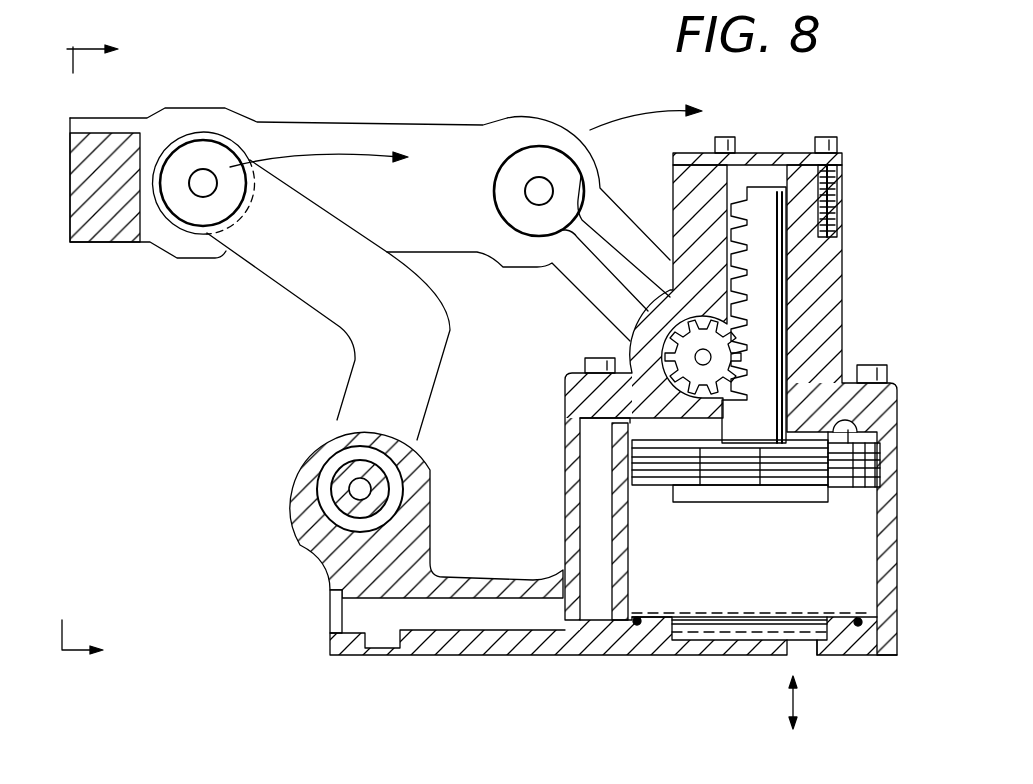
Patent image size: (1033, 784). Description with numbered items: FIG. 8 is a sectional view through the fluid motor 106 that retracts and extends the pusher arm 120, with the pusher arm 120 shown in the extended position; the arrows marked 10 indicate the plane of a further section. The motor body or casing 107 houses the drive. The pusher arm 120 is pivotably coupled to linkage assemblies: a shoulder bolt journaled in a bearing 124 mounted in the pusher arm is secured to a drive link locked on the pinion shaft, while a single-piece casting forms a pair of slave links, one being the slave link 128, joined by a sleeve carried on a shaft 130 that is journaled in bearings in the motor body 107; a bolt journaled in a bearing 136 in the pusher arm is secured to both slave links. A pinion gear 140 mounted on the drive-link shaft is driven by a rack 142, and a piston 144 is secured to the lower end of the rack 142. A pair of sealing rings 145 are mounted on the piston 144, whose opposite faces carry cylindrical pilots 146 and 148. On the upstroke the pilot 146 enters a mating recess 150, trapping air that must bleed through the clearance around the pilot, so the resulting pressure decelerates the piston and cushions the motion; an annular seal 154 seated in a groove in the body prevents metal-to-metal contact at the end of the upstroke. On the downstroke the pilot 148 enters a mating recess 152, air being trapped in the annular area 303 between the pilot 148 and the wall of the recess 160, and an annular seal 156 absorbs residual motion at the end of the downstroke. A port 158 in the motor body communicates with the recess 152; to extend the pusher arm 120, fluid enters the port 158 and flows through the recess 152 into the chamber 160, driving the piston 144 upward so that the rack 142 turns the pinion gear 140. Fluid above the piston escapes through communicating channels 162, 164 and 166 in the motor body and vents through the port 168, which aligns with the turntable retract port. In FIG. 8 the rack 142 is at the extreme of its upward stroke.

The section line 10 is at (108, 354).
The fluid motor 106 is at (415, 93).
The fluid motor body 107 is at (567, 380).
The pusher arm 120 is at (147, 88).
The bearing 124 is at (538, 147).
The slave link 128 is at (274, 282).
The shaft 130 is at (333, 477).
The bearing 136 is at (207, 142).
The pinion gear 140 is at (680, 343).
The rack 142 is at (777, 257).
The piston 144 is at (650, 497).
The sealing rings 145 is at (877, 480).
The cylindrical pilot 146 is at (837, 363).
The cylindrical pilot 148 is at (830, 510).
The mating recess 150 is at (705, 420).
The mating recess 152 is at (710, 630).
The annular seal 154 is at (817, 437).
The annular seal 156 is at (837, 657).
The port 158 is at (797, 652).
The chamber 160 is at (630, 573).
The channel 162 is at (580, 428).
The channel 164 is at (612, 525).
The channel 166 is at (450, 622).
The port 168 is at (383, 643).
The annular area 303 is at (850, 595).